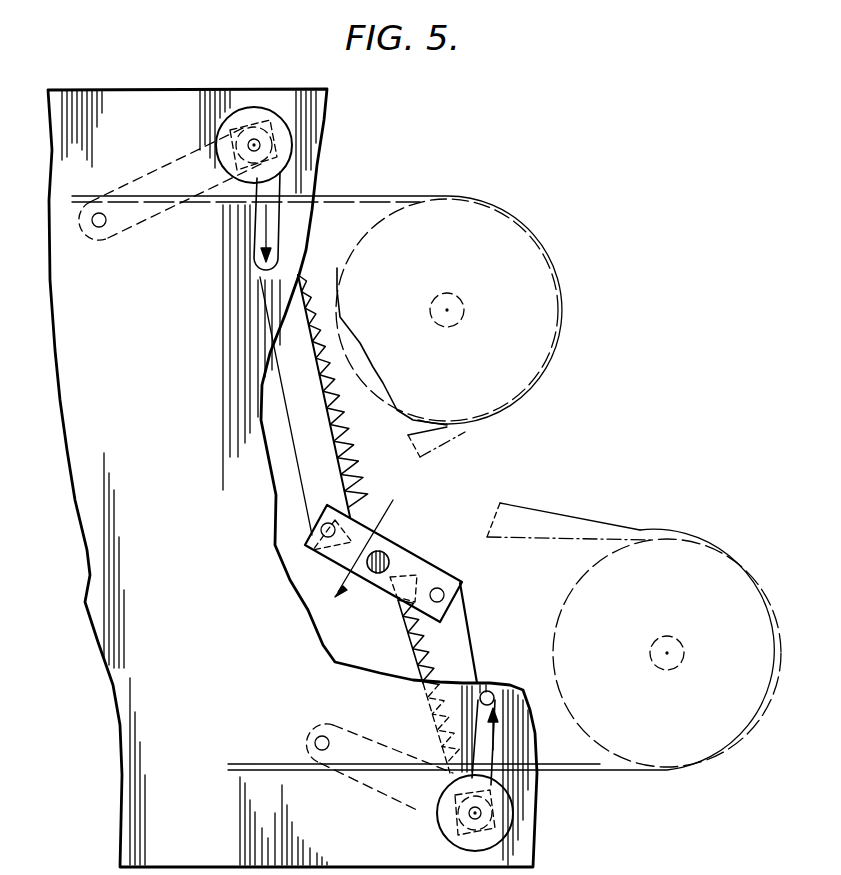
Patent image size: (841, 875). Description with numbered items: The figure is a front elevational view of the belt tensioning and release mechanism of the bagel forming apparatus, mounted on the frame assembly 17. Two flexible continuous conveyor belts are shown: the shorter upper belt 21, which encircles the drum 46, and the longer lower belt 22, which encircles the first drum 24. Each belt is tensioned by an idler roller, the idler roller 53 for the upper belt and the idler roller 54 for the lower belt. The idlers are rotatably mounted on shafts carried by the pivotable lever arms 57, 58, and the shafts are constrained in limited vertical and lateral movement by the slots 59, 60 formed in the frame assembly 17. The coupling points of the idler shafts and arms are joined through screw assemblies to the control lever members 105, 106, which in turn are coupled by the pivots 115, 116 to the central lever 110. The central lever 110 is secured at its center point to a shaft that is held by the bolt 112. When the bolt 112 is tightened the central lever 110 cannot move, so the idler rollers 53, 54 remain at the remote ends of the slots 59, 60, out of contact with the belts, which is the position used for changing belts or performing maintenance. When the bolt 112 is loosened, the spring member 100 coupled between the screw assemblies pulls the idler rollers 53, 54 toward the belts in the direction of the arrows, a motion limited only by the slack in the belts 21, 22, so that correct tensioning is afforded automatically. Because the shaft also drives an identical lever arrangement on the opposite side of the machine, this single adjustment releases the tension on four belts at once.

The frame assembly 17 is at (150, 80).
The upper conveyor belt 21 is at (463, 435).
The lower conveyor belt 22 is at (530, 507).
The first drum 24 is at (733, 560).
The drum 46 is at (530, 330).
The idler roller 53 is at (283, 148).
The idler roller 54 is at (442, 843).
The pivotable lever arm 57 is at (147, 172).
The pivotable lever arm 58 is at (417, 808).
The slot 59 is at (262, 273).
The slot 60 is at (497, 692).
The spring member 100 is at (368, 484).
The control lever member 105 is at (300, 470).
The control lever member 106 is at (473, 642).
The central lever 110 is at (375, 590).
The bolt 112 is at (390, 553).
The pivot 115 is at (308, 532).
The pivot 116 is at (447, 593).